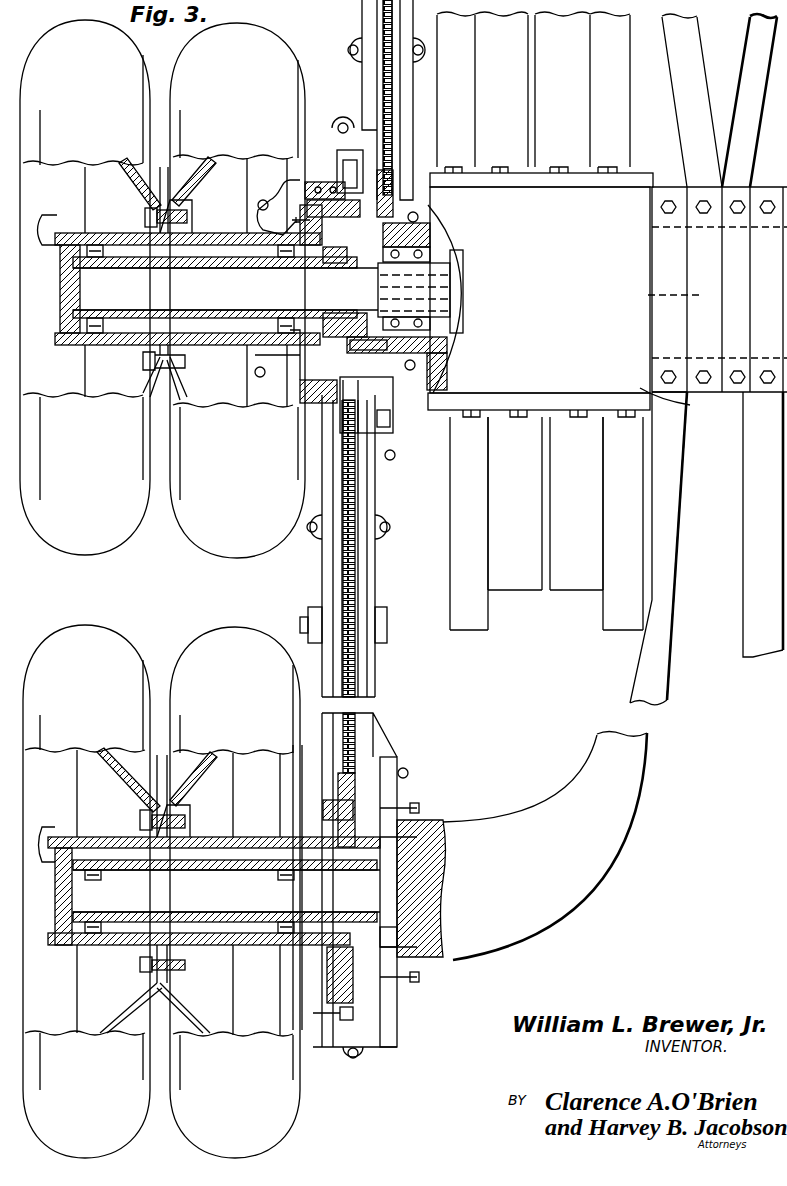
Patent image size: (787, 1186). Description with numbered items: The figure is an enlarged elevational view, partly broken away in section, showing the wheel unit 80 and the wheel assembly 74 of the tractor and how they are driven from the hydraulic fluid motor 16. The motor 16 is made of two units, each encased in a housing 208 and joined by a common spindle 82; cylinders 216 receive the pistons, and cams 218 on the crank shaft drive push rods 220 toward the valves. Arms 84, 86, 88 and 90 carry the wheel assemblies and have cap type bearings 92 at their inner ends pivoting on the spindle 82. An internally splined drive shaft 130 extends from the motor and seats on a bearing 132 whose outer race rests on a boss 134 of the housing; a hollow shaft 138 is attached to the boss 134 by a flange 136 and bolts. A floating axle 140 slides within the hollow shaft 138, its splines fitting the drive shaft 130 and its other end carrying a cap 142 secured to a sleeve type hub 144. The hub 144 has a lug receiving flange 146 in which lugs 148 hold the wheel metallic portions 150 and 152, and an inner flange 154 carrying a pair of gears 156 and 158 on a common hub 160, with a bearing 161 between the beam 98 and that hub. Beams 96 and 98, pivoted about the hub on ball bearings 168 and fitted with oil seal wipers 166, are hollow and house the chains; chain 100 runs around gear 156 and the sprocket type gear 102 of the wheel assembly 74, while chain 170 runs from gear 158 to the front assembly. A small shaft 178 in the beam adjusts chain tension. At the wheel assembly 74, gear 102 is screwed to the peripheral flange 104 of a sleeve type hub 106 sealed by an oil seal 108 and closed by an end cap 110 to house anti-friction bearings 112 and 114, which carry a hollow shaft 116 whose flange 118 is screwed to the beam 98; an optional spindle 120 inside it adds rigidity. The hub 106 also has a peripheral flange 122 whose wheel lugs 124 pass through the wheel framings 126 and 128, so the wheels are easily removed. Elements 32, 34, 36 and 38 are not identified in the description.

The hydraulic fluid motor 16 is at (540, 292).
The plate 32 is at (610, 89).
The plate 34 is at (456, 89).
The plate 36 is at (603, 620).
The plate 38 is at (470, 630).
The wheel assembly 74 is at (297, 1137).
The wheel unit 80 is at (51, 18).
The spindle 82 is at (657, 297).
The arm 84 is at (690, 30).
The arm 86 is at (748, 56).
The arm 88 is at (680, 610).
The arm 90 is at (748, 653).
The cap type bearing 92 is at (690, 260).
The beam 96 is at (366, 25).
The beam 98 is at (366, 588).
The chain 100 is at (356, 512).
The sprocket type gear 102 is at (355, 778).
The peripheral flange 104 is at (368, 875).
The sleeve type hub 106 is at (208, 840).
The oil seal 108 is at (305, 848).
The end cap 110 is at (48, 827).
The anti-friction bearing 112 is at (85, 848).
The anti-friction bearing 114 is at (272, 840).
The hollow shaft 116 is at (147, 870).
The flange 118 is at (385, 935).
The spindle 120 is at (385, 886).
The peripheral flange 122 is at (180, 812).
The wheel lugs 124 is at (140, 817).
The wheel framing 126 is at (190, 758).
The wheel framing 128 is at (112, 750).
The internally splined drive shaft 130 is at (440, 228).
The anti-friction bearing 132 is at (445, 222).
The boss 134 is at (440, 370).
The flange 136 is at (344, 292).
The hollow shaft 138 is at (118, 240).
The floating axle 140 is at (225, 289).
The cap 142 is at (45, 228).
The sleeve type hub 144 is at (210, 245).
The lug receiving flange 146 is at (182, 208).
The lugs 148 is at (145, 212).
The wheel metallic portion 150 is at (205, 170).
The wheel metallic portion 152 is at (138, 160).
The flange 154 is at (268, 195).
The gear 156 is at (336, 150).
The gear 158 is at (403, 173).
The common hub 160 is at (321, 225).
The anti-friction bearing 161 is at (305, 150).
The oil seal wipers 166 is at (395, 405).
The ball bearings 168 is at (268, 250).
The chain 170 is at (400, 18).
The small shaft 178 is at (300, 622).
The housing 208 is at (683, 398).
The cylinder 216 is at (539, 301).
The cam 218 is at (463, 285).
The push rod 220 is at (455, 242).